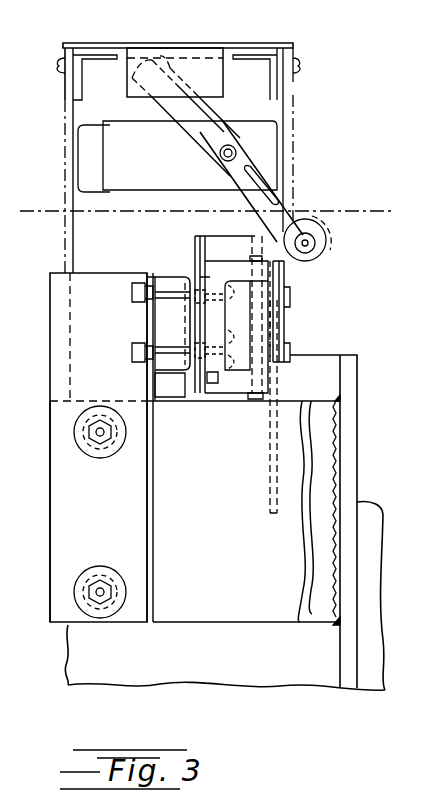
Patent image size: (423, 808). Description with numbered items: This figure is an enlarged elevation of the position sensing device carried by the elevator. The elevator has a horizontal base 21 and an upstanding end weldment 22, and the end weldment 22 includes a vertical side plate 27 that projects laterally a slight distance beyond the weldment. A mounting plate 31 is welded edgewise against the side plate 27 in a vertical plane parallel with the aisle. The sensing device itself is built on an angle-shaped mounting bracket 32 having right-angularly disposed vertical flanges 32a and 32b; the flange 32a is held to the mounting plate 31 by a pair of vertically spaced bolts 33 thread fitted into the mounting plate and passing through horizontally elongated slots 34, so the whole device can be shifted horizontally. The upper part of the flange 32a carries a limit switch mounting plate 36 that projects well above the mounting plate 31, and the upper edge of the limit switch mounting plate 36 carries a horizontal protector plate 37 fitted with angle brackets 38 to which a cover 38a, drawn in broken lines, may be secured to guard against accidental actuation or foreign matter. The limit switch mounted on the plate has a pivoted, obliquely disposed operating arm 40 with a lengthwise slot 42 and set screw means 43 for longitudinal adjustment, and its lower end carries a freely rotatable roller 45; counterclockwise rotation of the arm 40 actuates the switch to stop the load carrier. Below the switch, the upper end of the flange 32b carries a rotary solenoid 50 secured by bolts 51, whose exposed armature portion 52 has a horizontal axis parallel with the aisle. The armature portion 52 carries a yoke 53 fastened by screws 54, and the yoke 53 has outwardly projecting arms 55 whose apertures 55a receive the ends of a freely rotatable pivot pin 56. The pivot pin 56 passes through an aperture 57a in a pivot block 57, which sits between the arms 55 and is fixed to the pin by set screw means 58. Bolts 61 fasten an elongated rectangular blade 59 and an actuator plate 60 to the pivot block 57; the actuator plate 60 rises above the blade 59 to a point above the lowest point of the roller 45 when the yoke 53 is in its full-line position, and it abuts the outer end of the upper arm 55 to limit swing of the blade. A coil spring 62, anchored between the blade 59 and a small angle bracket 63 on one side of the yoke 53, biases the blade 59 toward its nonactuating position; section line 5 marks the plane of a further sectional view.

The section line 5- 5 is at (44, 200).
The horizontal base 21 is at (368, 685).
The end weldment 22 is at (225, 656).
The side plate 27 is at (357, 367).
The mounting plate 31 is at (243, 511).
The mounting bracket 32 is at (43, 466).
The flange 32a is at (65, 548).
The flange 32b is at (156, 490).
The bolts 33 is at (100, 446).
The horizontally elongated slots 34 is at (116, 450).
The limit switch mounting plate 36 is at (70, 237).
The protector plate 37 is at (240, 43).
The angle brackets 38 is at (224, 80).
The cover 38a is at (296, 101).
The arm 40 is at (215, 113).
The elongated slot 42 is at (218, 148).
The set screw means 43 is at (248, 146).
The roller 45 is at (327, 239).
The rotary solenoid 50 is at (155, 275).
The bolts 51 is at (130, 292).
The armature portion 52 is at (182, 272).
The yoke 53 is at (198, 262).
The screws 54 is at (257, 325).
The arms 55 is at (220, 261).
The apertures 55a is at (255, 255).
The pivot pin 56 is at (255, 400).
The pivot block 57 is at (262, 315).
The aperture 57a is at (248, 327).
The set screw means 58 is at (225, 333).
The blade 59 is at (278, 298).
The actuator plate 60 is at (273, 275).
The bolts 61 is at (290, 352).
The coil spring 62 is at (214, 384).
The small angle bracket 63 is at (185, 397).